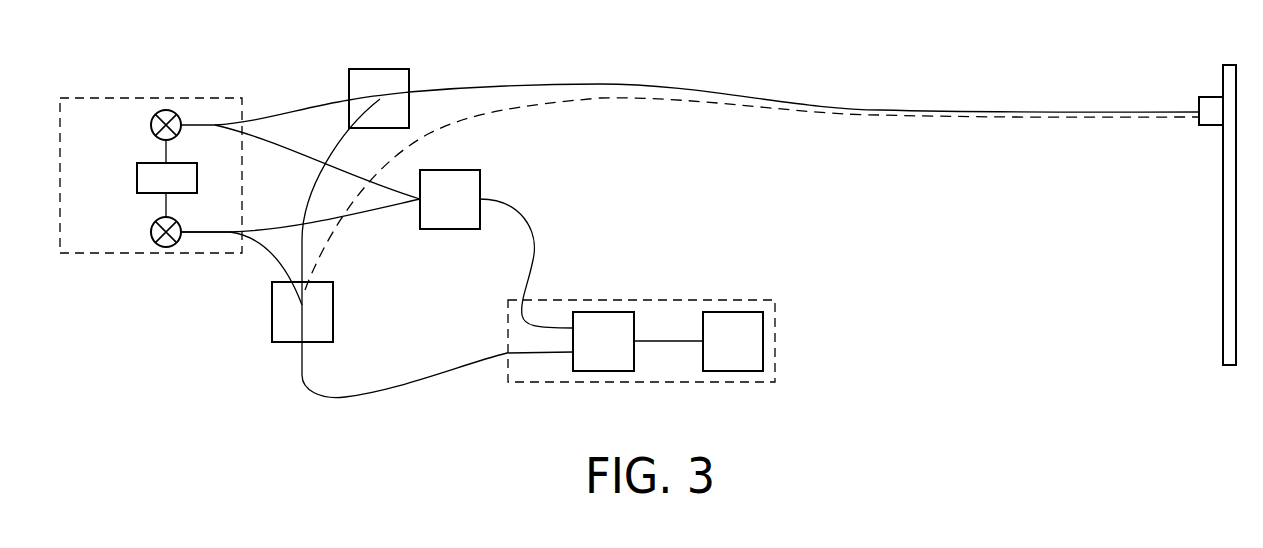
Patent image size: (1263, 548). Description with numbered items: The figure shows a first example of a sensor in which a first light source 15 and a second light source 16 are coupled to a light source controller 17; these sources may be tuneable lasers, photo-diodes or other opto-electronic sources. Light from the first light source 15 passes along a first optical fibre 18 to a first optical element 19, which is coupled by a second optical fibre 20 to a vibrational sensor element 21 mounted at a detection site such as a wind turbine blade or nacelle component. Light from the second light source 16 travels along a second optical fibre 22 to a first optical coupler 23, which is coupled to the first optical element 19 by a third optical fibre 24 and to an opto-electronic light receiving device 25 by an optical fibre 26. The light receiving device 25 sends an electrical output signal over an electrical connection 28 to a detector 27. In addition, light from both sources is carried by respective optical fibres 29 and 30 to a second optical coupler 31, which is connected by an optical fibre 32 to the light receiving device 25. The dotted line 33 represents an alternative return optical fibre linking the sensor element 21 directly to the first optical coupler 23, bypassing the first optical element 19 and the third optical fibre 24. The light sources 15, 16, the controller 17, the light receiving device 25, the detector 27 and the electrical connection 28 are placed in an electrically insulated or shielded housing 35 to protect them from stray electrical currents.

The first light source 15 is at (151, 125).
The second light source 16 is at (151, 232).
The light source controller 17 is at (137, 178).
The first optical fibre 18 is at (310, 108).
The first optical element 19 is at (378, 69).
The second optical fibre 20 is at (852, 108).
The vibrational sensor element 21 is at (1208, 97).
The second optical fibre 22 is at (197, 236).
The first optical coupler 23 is at (272, 325).
The third optical fibre 24 is at (287, 259).
The opto-electronic light receiving device 25 is at (600, 372).
The optical fibre 26 is at (415, 378).
The detector 27 is at (730, 372).
The electrical connection 28 is at (665, 342).
The optical fibre 29 is at (285, 145).
The optical fibre 30 is at (378, 212).
The second optical coupler 31 is at (448, 229).
The optical fibre 32 is at (537, 246).
The return optical fibre 33 is at (937, 118).
The housing 35 is at (217, 98).